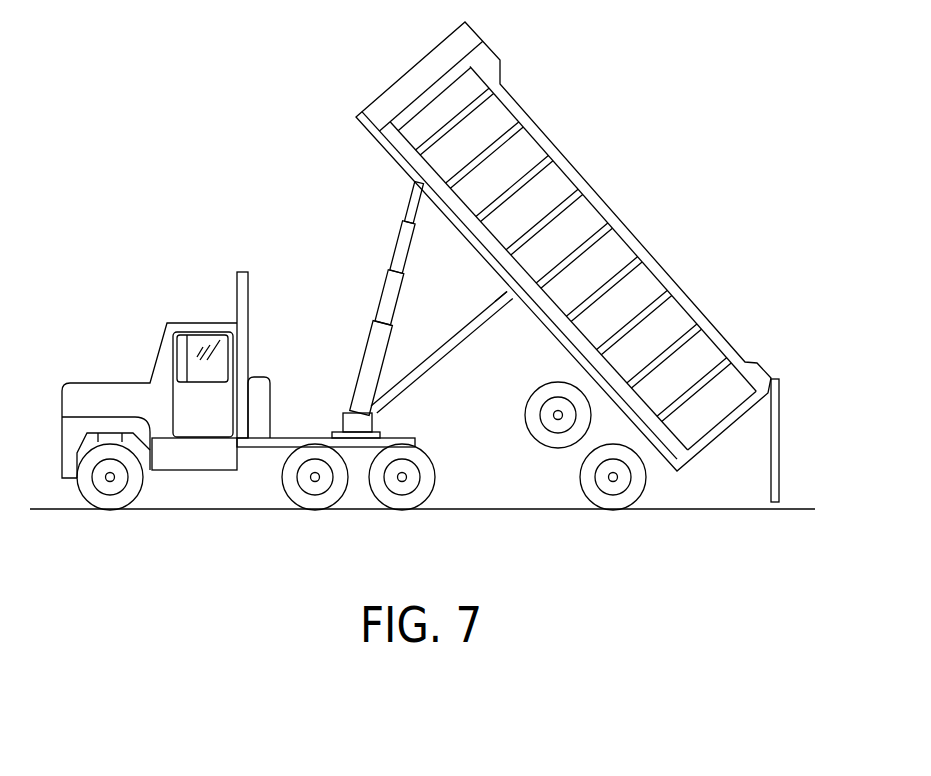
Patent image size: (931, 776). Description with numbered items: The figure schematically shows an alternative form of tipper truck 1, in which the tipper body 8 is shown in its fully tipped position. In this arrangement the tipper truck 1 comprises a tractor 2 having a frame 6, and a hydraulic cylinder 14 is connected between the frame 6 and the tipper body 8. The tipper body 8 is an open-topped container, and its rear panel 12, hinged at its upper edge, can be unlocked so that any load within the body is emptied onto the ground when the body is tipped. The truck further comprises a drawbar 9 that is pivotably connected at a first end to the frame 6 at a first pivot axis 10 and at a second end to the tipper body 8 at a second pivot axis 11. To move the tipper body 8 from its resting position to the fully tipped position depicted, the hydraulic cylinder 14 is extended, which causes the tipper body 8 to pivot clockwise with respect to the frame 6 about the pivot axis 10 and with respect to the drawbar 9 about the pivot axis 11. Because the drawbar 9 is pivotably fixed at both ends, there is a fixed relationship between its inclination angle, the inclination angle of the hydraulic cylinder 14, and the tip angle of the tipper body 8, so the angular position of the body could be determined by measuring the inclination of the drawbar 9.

The tipper truck 1 is at (593, 26).
The tractor 2 is at (193, 294).
The frame 6 is at (263, 448).
The tipper body 8 is at (592, 185).
The drawbar 9 is at (428, 369).
The first pivot axis 10 is at (345, 423).
The second pivot axis 11 is at (507, 297).
The rear panel 12 is at (780, 460).
The hydraulic cylinder 14 is at (377, 297).